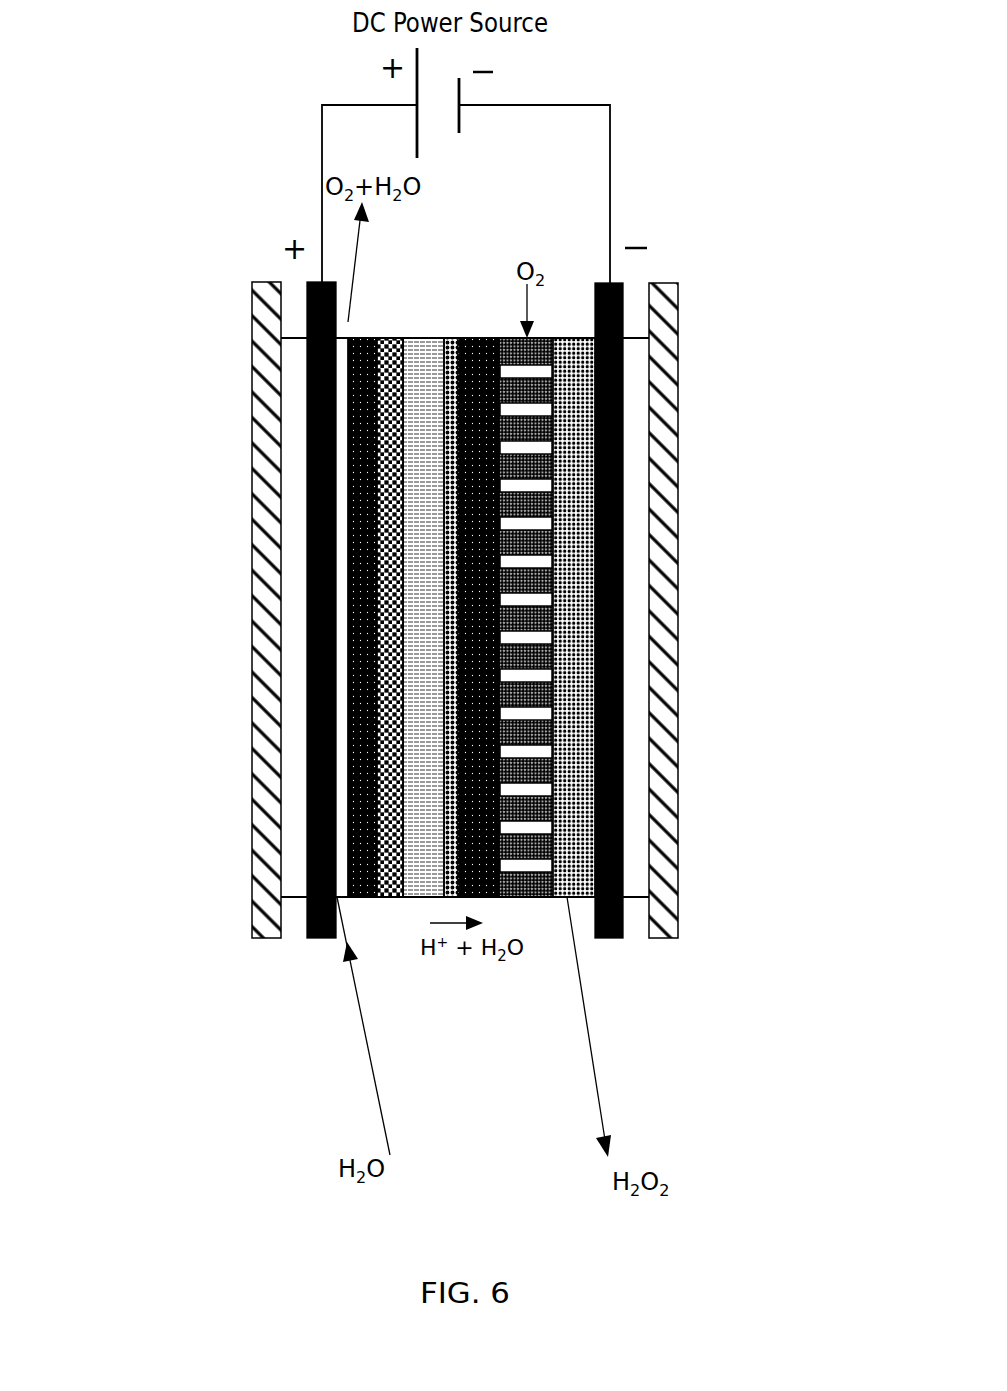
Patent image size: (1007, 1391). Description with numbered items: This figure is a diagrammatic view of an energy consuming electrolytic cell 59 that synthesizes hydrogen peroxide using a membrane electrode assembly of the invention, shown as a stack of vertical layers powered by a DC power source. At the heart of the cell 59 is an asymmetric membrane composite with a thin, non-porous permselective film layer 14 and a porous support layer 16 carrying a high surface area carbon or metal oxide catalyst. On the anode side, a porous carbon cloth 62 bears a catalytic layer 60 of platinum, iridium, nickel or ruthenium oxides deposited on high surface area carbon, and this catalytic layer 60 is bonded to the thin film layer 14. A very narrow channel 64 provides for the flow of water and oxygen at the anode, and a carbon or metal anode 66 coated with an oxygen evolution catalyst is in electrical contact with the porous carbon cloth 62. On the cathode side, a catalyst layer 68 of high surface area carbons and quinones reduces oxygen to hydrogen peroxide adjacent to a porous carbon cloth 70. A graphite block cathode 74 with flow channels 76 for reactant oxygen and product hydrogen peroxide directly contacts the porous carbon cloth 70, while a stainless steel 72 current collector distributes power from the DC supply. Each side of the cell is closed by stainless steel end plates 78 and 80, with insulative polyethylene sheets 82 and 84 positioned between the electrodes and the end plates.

The electrolytic cell 59 is at (700, 140).
The permselective film layer 14 is at (404, 337).
The porous support layer 16 is at (431, 337).
The catalytic layer 60 is at (392, 897).
The porous carbon cloth 62 is at (388, 897).
The channel 64 is at (362, 897).
The anode 66 is at (322, 940).
The catalyst layer 68 is at (458, 337).
The porous carbon cloth 70 is at (487, 897).
The stainless steel 72 is at (608, 938).
The graphite block cathode 74 is at (527, 897).
The flow channels 76 is at (545, 370).
The stainless steel end plate 78 is at (678, 325).
The stainless steel end plate 80 is at (250, 888).
The insulative polyethylene sheet 82 is at (637, 337).
The insulative polyethylene sheet 84 is at (293, 883).